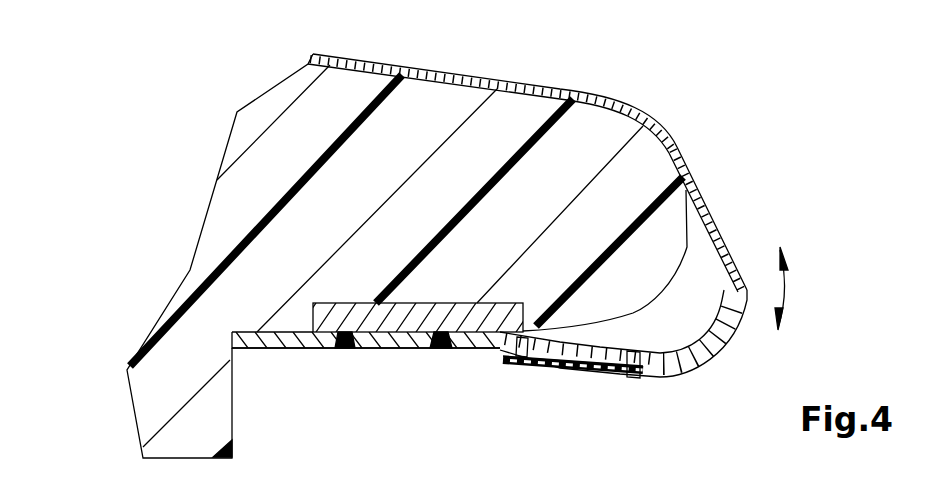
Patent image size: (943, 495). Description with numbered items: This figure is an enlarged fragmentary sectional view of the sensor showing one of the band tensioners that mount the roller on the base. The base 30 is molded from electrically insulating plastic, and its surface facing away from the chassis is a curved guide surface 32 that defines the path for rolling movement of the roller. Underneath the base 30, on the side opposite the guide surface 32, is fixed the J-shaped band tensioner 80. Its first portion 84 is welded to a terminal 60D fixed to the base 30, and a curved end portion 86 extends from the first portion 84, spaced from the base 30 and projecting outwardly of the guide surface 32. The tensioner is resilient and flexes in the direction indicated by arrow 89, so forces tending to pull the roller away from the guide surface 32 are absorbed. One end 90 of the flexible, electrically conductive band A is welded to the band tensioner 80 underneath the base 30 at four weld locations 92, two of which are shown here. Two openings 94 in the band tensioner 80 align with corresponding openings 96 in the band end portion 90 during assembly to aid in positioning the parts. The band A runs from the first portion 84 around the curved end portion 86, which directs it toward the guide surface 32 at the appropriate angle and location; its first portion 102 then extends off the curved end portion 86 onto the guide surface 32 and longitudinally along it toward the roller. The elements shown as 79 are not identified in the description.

The base 30 is at (233, 213).
The curved guide surface 32 is at (528, 84).
The first portion of band A 102 is at (682, 152).
The openings in band tensioner 94 is at (637, 347).
The terminal 60D is at (415, 312).
The band tensioner 80 is at (476, 364).
The fastener 79 is at (350, 350).
The first portion of band tensioner 84 is at (323, 348).
The curved end portion of band tensioner 86 is at (715, 333).
The weld locations 92 is at (603, 370).
The end of band A 90 is at (550, 367).
The openings in band end portion 96 is at (520, 363).
The arrow 89 is at (788, 290).
The band A is at (432, 58).